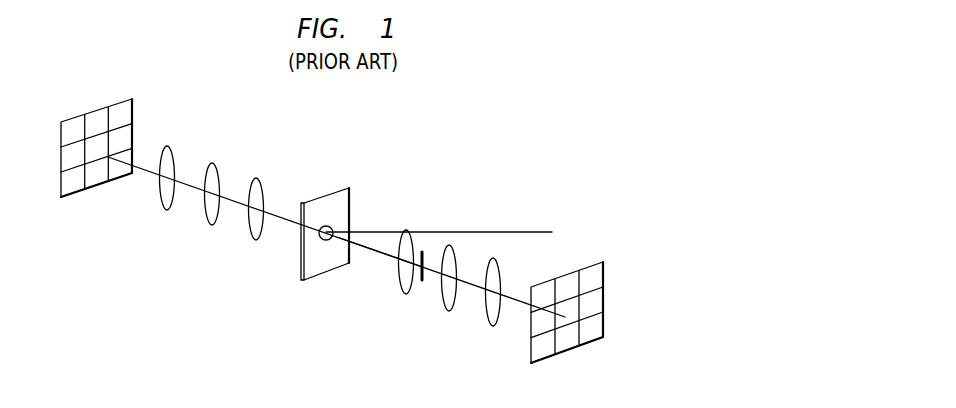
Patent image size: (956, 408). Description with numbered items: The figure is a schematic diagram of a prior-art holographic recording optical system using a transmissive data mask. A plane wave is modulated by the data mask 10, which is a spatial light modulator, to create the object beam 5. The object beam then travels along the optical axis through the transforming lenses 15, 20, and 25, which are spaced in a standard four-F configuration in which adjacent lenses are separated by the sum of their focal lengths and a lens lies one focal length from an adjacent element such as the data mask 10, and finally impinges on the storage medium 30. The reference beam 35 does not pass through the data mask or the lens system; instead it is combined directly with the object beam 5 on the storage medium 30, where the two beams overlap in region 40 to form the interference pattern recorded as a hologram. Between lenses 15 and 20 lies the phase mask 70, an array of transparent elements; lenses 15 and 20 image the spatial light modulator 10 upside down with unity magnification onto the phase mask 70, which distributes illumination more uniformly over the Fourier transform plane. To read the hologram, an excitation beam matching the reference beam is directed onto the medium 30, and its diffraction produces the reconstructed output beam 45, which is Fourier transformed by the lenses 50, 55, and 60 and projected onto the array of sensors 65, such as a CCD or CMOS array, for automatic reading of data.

The object beam 5 is at (374, 248).
The data mask 10 is at (603, 263).
The transforming lens 15 is at (491, 324).
The transforming lens 20 is at (447, 309).
The transforming lens 25 is at (403, 292).
The storage medium 30 is at (300, 277).
The reference beam 35 is at (552, 232).
The overlap region 40 is at (334, 229).
The reconstructed output beam 45 is at (278, 212).
The lens 50 is at (252, 237).
The lens 55 is at (209, 221).
The lens 60 is at (164, 206).
The array of sensors 65 is at (132, 100).
The phase mask 70 is at (423, 252).